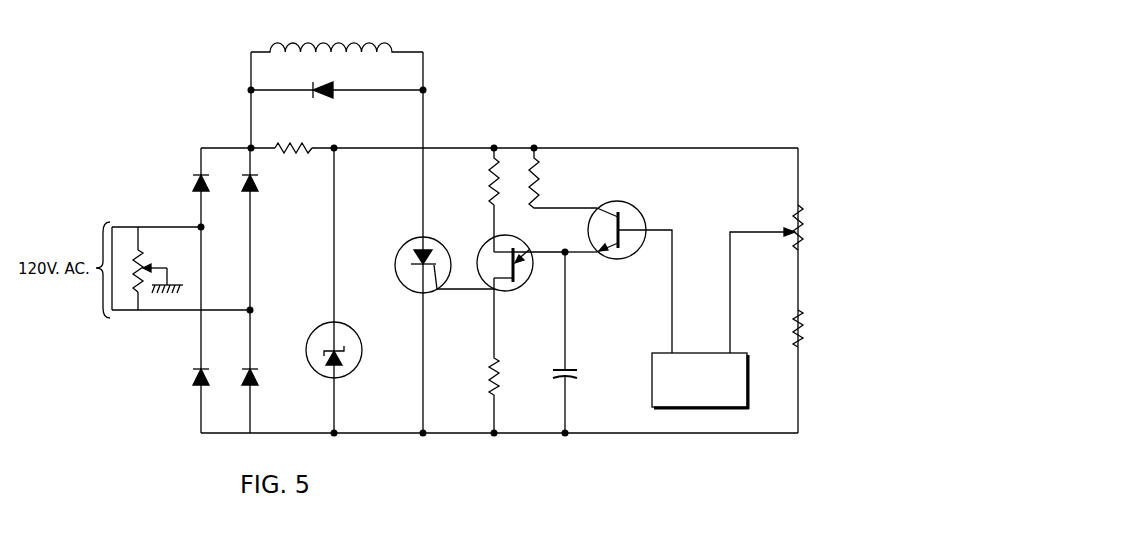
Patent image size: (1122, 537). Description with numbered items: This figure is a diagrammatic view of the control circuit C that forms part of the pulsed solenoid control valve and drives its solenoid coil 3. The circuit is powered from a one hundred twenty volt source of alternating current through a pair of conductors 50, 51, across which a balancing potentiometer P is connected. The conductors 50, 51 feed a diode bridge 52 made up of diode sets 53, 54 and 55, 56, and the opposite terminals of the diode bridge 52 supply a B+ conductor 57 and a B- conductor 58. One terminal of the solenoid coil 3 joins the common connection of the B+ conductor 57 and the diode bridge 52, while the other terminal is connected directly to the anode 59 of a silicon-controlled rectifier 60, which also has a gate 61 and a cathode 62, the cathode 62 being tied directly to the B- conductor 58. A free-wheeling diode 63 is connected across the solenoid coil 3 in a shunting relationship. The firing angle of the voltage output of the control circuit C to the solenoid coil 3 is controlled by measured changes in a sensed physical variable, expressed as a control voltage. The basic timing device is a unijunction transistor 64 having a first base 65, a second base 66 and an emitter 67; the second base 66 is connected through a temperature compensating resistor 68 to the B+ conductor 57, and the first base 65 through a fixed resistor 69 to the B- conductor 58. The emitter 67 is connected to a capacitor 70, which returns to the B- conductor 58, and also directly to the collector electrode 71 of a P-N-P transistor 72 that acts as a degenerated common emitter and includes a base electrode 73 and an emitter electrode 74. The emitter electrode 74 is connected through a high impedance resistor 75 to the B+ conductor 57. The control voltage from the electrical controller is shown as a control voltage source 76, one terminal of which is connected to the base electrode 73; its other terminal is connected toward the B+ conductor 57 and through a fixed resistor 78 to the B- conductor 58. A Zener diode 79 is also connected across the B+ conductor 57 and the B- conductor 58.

The solenoid coil 3 is at (390, 44).
The conductor 50 is at (161, 227).
The conductor 51 is at (170, 311).
The diode bridge 52 is at (199, 323).
The diode 53 is at (196, 181).
The diode 54 is at (256, 376).
The diode 55 is at (258, 183).
The diode 56 is at (197, 380).
The B+ conductor 57 is at (445, 148).
The B- conductor 58 is at (672, 436).
The anode 59 is at (416, 252).
The silicon-controlled rectifier 60 is at (423, 264).
The gate 61 is at (433, 272).
The cathode 62 is at (412, 267).
The free-wheeling diode 63 is at (326, 95).
The unijunction transistor 64 is at (521, 265).
The base-1 65 is at (503, 279).
The base-2 66 is at (500, 251).
The emitter 67 is at (530, 249).
The temperature compensating resistor 68 is at (490, 182).
The fixed resistor 69 is at (490, 364).
The capacitor 70 is at (572, 380).
The collector electrode 71 is at (607, 250).
The P-N-P transistor 72 is at (684, 257).
The base electrode 73 is at (626, 229).
The emitter electrode 74 is at (603, 206).
The high impedance resistor 75 is at (539, 181).
The control voltage source 76 is at (652, 392).
The fixed resistor 78 is at (793, 320).
The Zener diode 79 is at (314, 326).
The balancing potentiometer P is at (160, 268).
The control circuit C is at (552, 126).